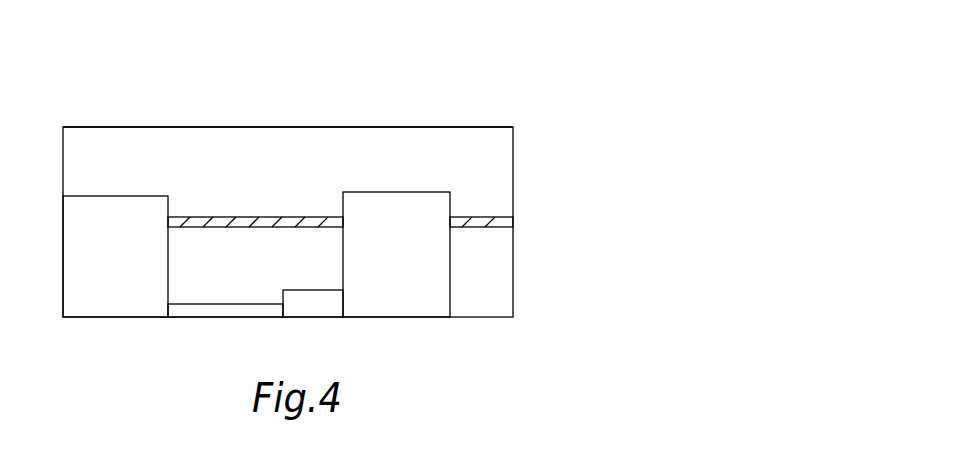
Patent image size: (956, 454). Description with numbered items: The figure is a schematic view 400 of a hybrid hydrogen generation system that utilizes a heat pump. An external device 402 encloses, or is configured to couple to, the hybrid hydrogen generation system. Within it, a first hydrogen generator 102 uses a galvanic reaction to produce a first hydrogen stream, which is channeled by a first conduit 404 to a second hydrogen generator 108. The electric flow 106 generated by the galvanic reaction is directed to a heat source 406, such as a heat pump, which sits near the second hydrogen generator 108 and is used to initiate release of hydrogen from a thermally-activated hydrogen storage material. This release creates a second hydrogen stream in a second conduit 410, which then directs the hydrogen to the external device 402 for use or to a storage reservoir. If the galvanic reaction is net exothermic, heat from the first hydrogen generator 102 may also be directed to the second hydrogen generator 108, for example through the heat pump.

The schematic view 400 is at (548, 42).
The external device 402 is at (287, 128).
The first hydrogen generator 102 is at (118, 198).
The second hydrogen generator 108 is at (398, 196).
The first conduit 404 is at (258, 220).
The second conduit 410 is at (483, 220).
The heat source 406 is at (315, 290).
The electric flow 106 is at (225, 288).